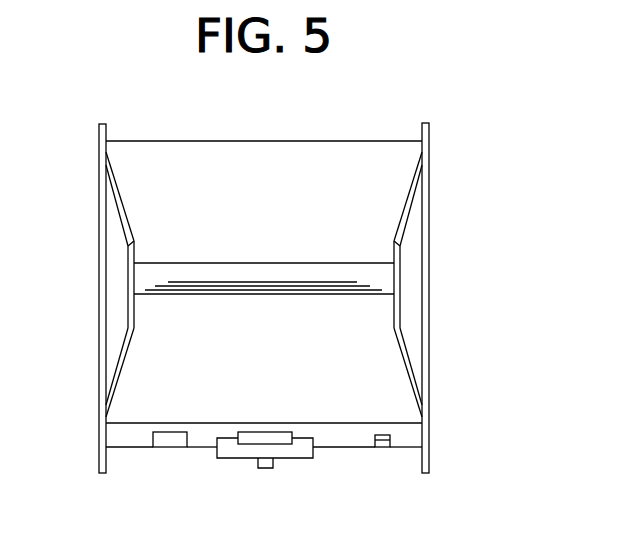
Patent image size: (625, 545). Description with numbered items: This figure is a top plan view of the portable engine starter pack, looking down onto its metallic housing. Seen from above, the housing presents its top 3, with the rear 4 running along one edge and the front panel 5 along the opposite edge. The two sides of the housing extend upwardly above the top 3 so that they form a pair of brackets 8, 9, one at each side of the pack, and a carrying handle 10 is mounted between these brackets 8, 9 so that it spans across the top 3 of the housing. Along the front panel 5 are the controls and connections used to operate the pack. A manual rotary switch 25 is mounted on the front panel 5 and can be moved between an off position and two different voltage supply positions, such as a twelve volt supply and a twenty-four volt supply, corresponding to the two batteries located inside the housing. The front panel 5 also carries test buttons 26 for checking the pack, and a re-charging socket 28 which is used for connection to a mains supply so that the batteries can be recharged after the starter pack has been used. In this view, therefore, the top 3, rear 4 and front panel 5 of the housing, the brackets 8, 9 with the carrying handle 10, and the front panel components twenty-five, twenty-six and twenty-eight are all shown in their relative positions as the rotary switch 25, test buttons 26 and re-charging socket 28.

The top 3 is at (274, 357).
The rear 4 is at (322, 140).
The front panel 5 is at (338, 438).
The bracket 8 is at (115, 293).
The bracket 9 is at (412, 291).
The carrying handle 10 is at (238, 268).
The manual rotary switch 25 is at (265, 468).
The test buttons 26 is at (380, 447).
The re-charging socket 28 is at (170, 447).